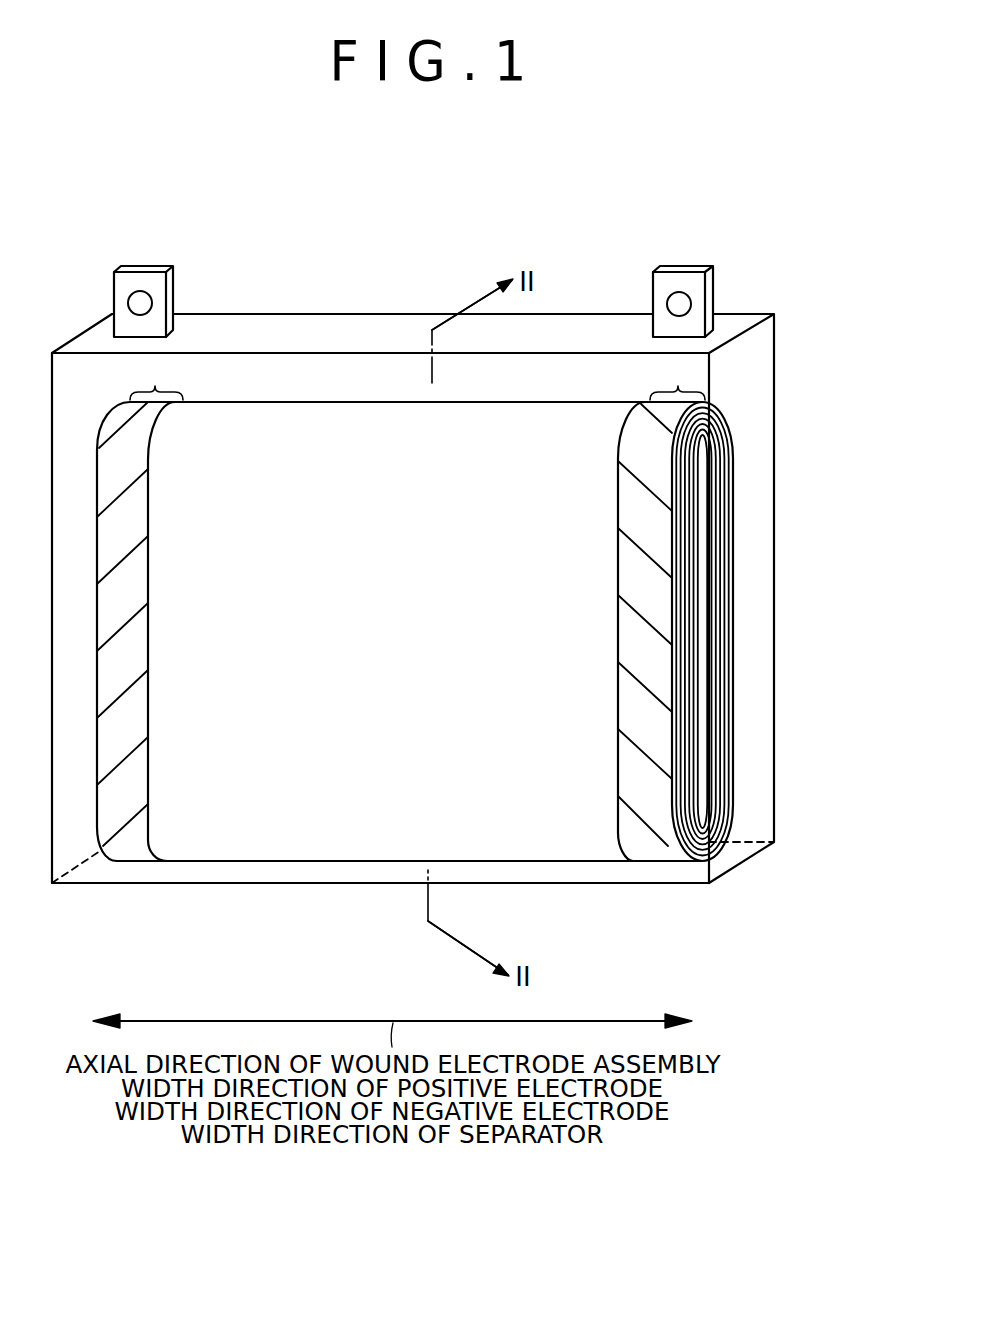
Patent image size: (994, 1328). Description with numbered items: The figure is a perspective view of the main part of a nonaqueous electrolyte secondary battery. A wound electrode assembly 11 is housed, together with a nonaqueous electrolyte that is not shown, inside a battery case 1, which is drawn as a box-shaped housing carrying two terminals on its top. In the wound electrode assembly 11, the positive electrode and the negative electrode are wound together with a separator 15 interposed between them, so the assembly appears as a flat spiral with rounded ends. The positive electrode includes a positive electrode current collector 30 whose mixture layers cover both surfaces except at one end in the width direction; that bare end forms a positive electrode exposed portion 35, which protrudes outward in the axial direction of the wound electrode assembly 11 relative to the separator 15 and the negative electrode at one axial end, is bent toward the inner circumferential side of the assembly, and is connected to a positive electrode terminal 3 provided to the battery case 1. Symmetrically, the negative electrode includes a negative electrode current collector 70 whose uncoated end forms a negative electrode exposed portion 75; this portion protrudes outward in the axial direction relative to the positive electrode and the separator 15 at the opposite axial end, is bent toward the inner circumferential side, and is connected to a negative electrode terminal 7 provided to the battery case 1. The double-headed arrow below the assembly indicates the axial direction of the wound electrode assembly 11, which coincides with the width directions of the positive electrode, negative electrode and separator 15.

The battery case 1 is at (755, 373).
The positive electrode terminal 3 is at (138, 278).
The negative electrode terminal 7 is at (678, 278).
The wound electrode assembly 11 is at (415, 595).
The separator 15 is at (367, 845).
The positive electrode current collector 30 is at (126, 845).
The positive electrode exposed portion 35 is at (155, 387).
The negative electrode current collector 70 is at (650, 845).
The negative electrode exposed portion 75 is at (678, 389).